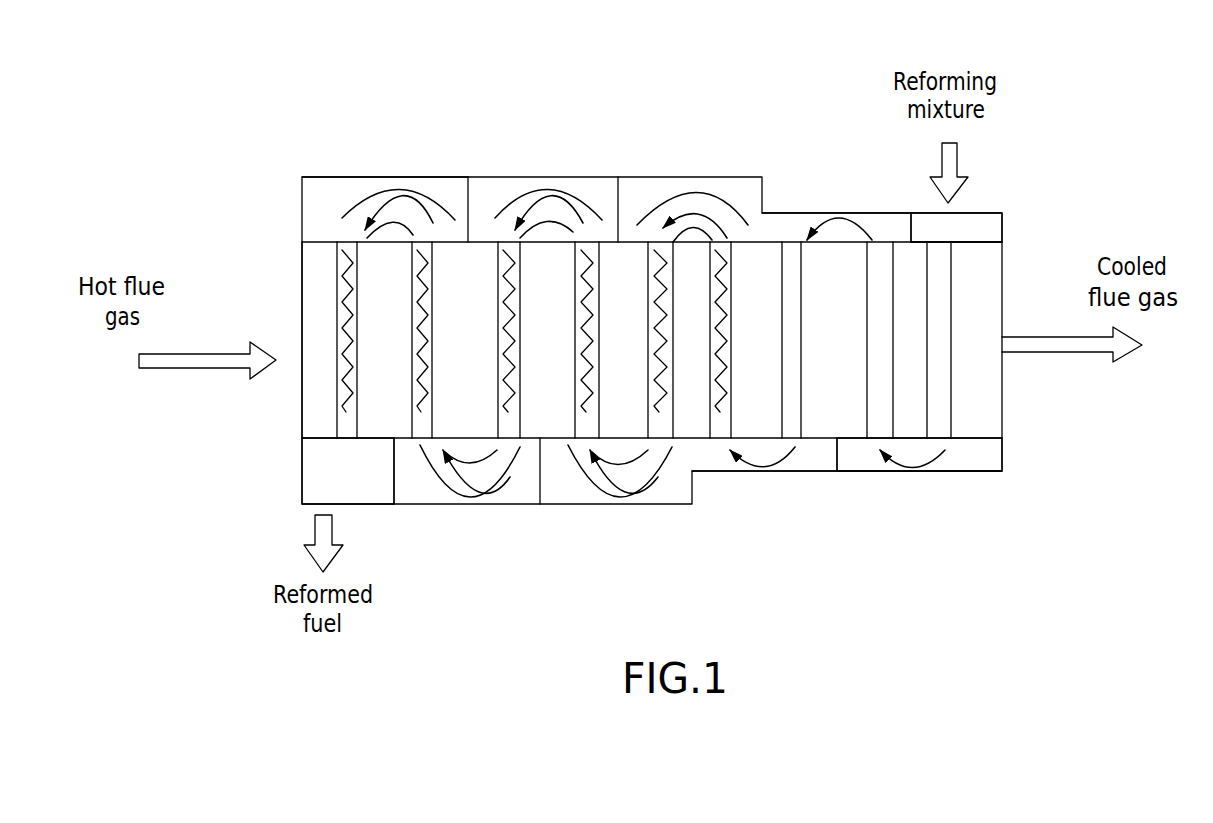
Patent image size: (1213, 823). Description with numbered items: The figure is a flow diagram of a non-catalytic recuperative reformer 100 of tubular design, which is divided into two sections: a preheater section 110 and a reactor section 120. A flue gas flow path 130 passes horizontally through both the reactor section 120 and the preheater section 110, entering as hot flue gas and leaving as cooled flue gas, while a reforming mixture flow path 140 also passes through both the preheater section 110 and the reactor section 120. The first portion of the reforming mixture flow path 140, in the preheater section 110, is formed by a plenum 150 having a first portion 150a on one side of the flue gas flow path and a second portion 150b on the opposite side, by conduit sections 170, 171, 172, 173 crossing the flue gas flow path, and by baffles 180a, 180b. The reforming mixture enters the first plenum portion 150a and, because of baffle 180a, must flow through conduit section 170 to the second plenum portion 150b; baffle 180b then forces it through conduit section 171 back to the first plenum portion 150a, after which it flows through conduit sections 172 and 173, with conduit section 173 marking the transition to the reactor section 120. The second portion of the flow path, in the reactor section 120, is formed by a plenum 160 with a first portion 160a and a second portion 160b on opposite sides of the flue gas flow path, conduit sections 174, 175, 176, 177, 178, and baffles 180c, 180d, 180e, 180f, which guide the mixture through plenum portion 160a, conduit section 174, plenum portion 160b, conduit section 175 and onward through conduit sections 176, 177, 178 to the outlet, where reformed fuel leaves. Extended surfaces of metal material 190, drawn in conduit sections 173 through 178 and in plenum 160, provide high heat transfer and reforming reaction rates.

The recuperative reformer 100 is at (993, 660).
The preheater section 110 is at (817, 168).
The reactor section 120 is at (440, 130).
The flue gas flow path 130 is at (302, 298).
The reforming mixture flow path 140 is at (989, 212).
The plenum 150 is at (993, 478).
The first plenum portion 150a is at (990, 225).
The second plenum portion 150b is at (987, 452).
The plenum 160 is at (330, 177).
The first plenum portion 160a is at (315, 193).
The second plenum portion 160b is at (316, 455).
The conduit section 170 is at (945, 428).
The conduit section 171 is at (873, 428).
The conduit section 172 is at (797, 428).
The conduit section 173 is at (721, 428).
The conduit section 174 is at (665, 428).
The conduit section 175 is at (581, 428).
The conduit section 176 is at (521, 428).
The conduit section 177 is at (418, 430).
The conduit section 178 is at (352, 428).
The baffle 180a is at (911, 235).
The baffle 180b is at (837, 462).
The baffle 180c is at (619, 205).
The baffle 180d is at (541, 490).
The baffle 180e is at (469, 195).
The baffle 180f is at (395, 462).
The extended surfaces of metal material 190 is at (578, 175).